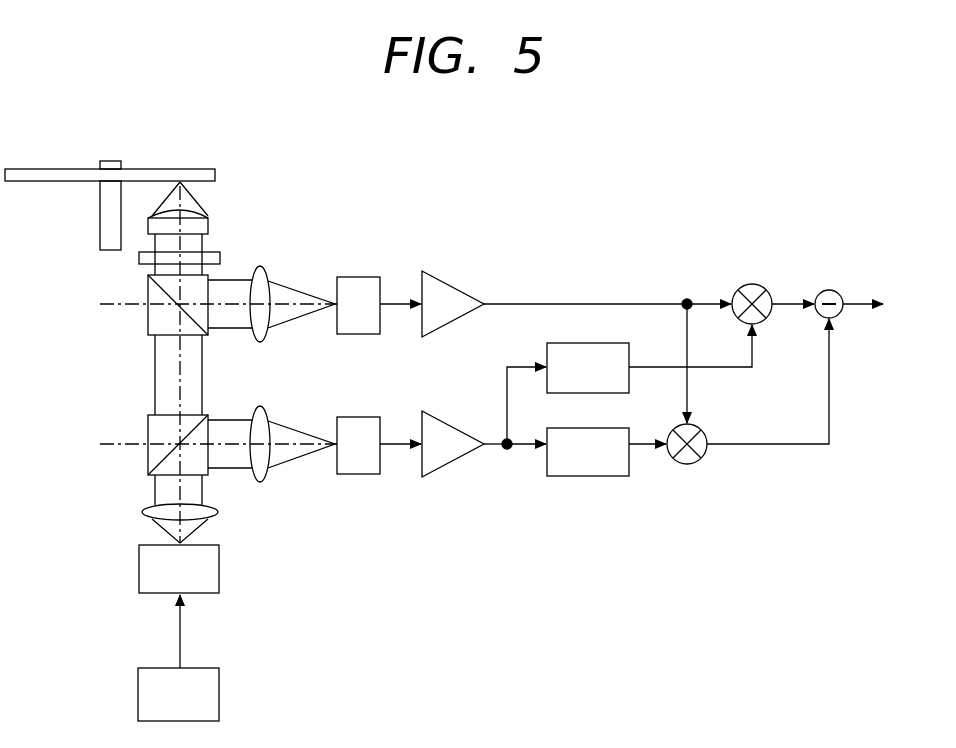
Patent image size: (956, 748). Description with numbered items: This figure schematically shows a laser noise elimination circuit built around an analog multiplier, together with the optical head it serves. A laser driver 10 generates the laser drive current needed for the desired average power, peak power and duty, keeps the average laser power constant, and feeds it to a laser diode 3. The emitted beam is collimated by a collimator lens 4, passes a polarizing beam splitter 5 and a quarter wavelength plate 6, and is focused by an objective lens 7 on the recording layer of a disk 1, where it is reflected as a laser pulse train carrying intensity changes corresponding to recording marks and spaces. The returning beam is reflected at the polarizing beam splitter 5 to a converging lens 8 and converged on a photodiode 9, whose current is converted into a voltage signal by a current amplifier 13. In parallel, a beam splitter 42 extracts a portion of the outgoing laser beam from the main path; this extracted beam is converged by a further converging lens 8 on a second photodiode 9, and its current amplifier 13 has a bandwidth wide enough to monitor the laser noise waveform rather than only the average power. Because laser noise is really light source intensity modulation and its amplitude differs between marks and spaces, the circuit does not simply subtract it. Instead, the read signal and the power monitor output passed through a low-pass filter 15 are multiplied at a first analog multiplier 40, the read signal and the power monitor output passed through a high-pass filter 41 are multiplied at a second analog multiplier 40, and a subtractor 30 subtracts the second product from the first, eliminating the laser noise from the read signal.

The disk 1 is at (52, 172).
The laser diode 3 is at (150, 563).
The collimator lens 4 is at (142, 510).
The polarizing beam splitter 5 is at (160, 320).
The quarter wavelength plate 6 is at (200, 257).
The objective lens 7 is at (208, 221).
The converging lens 8 is at (262, 417).
The photodiode 9 is at (360, 277).
The laser driver 10 is at (150, 690).
The current amplifier 13 is at (453, 285).
The low-pass filter 15 is at (615, 343).
The subtractor 30 is at (837, 289).
The analog multiplier 40 is at (758, 282).
The high-pass filter 41 is at (608, 477).
The beam splitter 42 is at (148, 455).